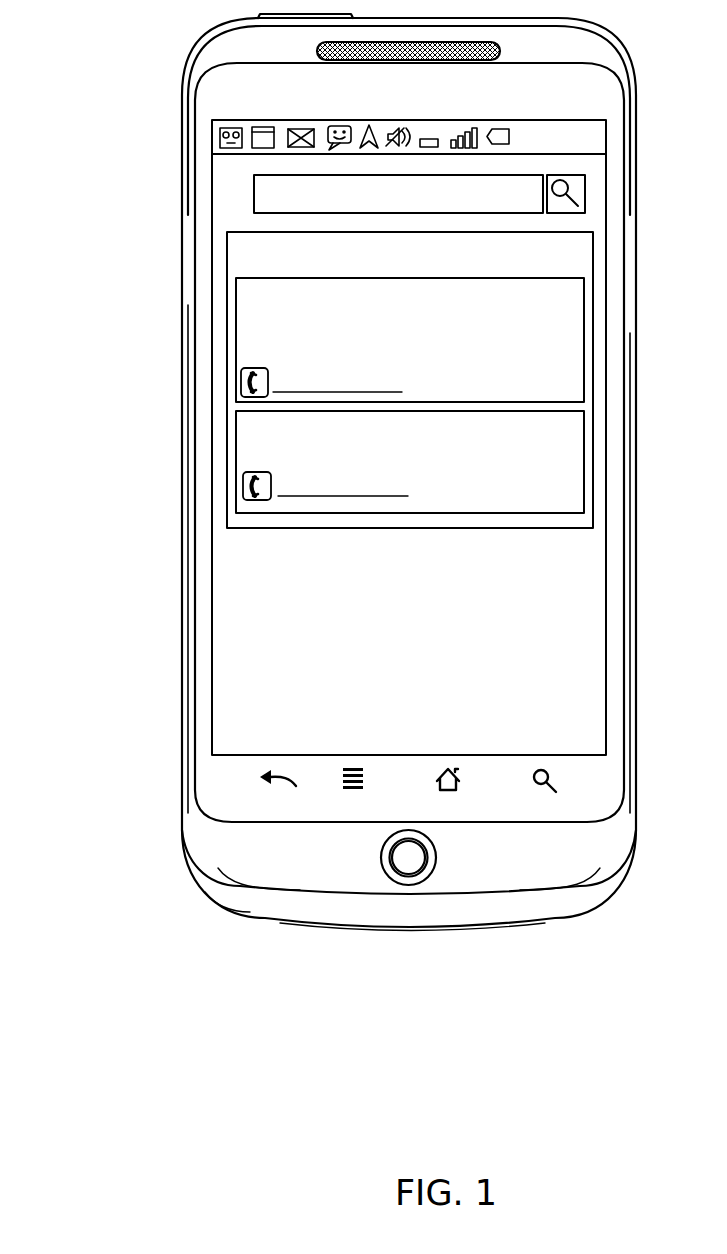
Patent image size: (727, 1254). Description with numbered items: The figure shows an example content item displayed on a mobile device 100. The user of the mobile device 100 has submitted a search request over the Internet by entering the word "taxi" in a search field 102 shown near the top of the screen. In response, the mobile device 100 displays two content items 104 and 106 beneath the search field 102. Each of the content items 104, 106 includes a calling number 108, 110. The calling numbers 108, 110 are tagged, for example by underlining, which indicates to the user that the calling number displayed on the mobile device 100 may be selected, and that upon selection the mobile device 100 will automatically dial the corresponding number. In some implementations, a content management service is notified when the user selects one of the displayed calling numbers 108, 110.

The mobile device 100 is at (141, 67).
The search field 102 is at (254, 192).
The content item 104 is at (236, 343).
The content item 106 is at (236, 476).
The calling number 108 is at (440, 389).
The calling number 110 is at (440, 482).